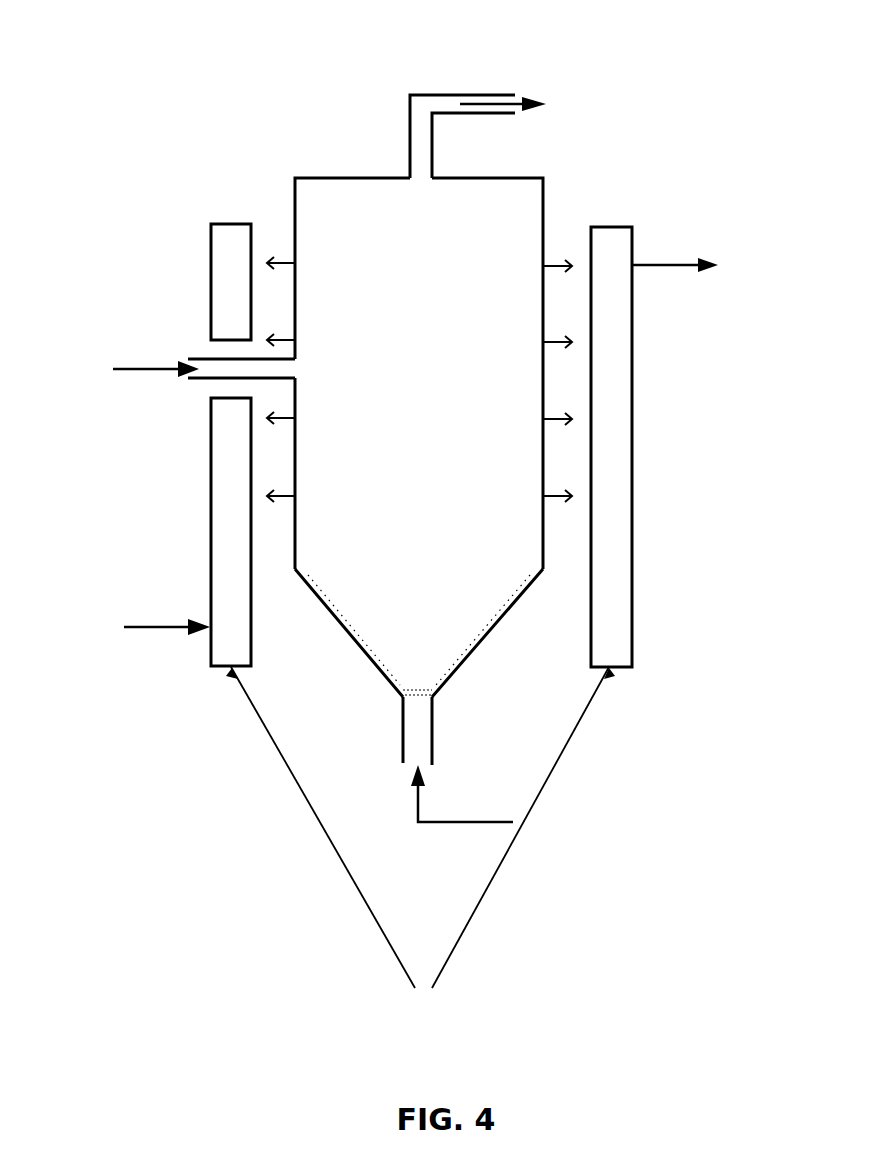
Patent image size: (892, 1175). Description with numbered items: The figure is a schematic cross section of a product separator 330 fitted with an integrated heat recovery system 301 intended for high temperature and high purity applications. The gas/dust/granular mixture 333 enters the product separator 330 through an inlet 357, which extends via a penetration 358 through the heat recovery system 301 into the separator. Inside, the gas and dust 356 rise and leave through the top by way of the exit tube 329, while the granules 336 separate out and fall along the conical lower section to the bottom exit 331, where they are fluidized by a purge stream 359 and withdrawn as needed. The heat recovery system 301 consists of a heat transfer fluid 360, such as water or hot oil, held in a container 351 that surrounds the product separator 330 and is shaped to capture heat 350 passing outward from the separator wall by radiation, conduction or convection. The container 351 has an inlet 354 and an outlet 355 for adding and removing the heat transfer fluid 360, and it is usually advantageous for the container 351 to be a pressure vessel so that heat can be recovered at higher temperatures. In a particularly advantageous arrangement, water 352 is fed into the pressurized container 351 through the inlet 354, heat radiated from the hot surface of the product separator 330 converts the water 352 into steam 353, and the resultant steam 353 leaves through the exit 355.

The heat recovery system 301 is at (420, 848).
The exit tube 329 is at (407, 128).
The product separator 330 is at (512, 207).
The bottom exit 331 is at (436, 749).
The gas/dust/granular mixture 333 is at (140, 371).
The granules 336 is at (476, 648).
The heat 350 is at (283, 261).
The container 351 is at (635, 591).
The water 352 is at (152, 630).
The steam 353 is at (657, 270).
The inlet 354 is at (208, 622).
The outlet 355 is at (635, 261).
The gas and dust 356 is at (487, 102).
The inlet 357 is at (296, 370).
The penetration 358 is at (220, 352).
The purge stream 359 is at (456, 826).
The heat transfer fluid 360 is at (610, 535).